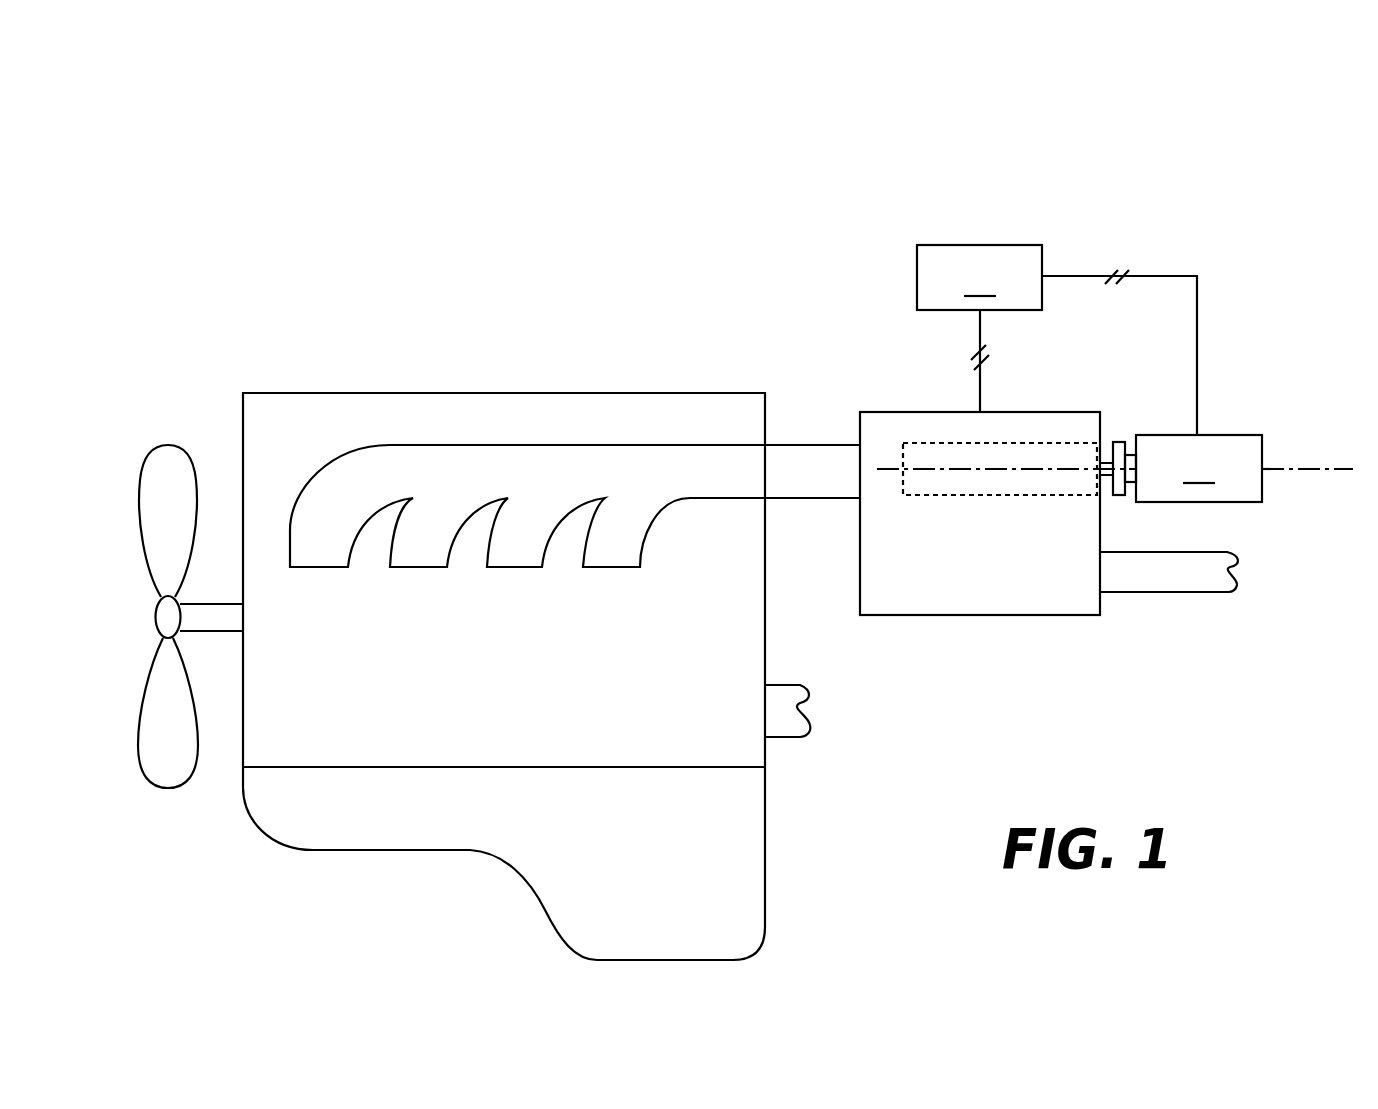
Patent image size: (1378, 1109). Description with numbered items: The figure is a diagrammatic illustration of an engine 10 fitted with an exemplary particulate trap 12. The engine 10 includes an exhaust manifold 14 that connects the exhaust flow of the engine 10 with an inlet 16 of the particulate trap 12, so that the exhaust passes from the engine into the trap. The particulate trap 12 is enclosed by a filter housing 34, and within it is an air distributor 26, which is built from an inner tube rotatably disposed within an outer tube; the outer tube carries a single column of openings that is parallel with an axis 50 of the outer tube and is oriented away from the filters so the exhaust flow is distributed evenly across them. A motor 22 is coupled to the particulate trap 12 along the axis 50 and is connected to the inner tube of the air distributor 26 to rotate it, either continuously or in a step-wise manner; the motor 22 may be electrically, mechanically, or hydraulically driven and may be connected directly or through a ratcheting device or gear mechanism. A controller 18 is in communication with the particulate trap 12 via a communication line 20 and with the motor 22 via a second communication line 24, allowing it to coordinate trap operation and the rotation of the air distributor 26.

The engine 10 is at (393, 321).
The particulate trap 12 is at (1135, 660).
The exhaust manifold 14 is at (480, 490).
The inlet 16 is at (844, 513).
The controller 18 is at (979, 277).
The communication line 20 is at (980, 388).
The motor 22 is at (1199, 468).
The communication line 24 is at (1198, 345).
The air distributor 26 is at (983, 495).
The filter housing 34 is at (882, 412).
The axis 50 is at (1307, 466).